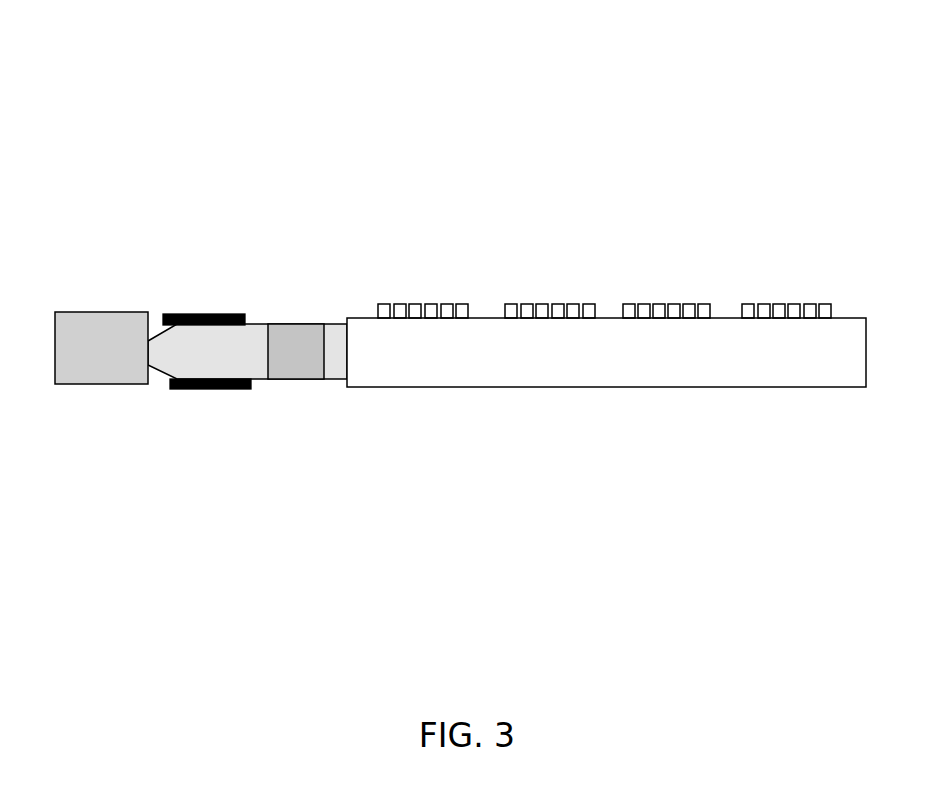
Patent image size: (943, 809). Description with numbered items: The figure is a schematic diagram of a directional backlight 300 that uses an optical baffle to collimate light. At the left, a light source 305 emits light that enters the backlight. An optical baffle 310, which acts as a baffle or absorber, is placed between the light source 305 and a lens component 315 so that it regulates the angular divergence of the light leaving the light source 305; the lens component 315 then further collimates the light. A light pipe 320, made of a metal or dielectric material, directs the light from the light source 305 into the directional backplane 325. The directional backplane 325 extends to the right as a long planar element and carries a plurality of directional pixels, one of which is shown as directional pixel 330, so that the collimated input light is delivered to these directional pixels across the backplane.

The directional backlight 300 is at (453, 72).
The light source 305 is at (87, 309).
The optical baffle 310 is at (192, 313).
The lens component 315 is at (288, 322).
The light pipe 320 is at (257, 380).
The directional backplane 325 is at (387, 386).
The directional pixel 330 is at (427, 303).